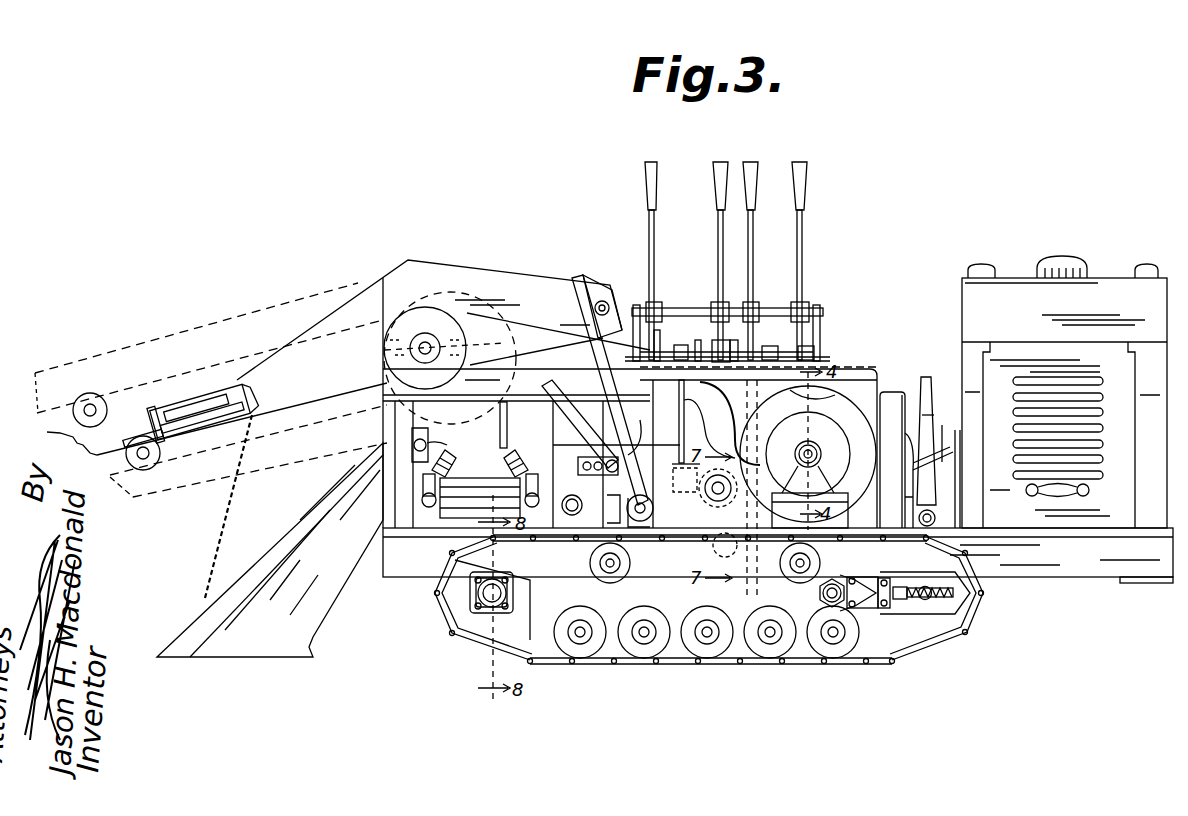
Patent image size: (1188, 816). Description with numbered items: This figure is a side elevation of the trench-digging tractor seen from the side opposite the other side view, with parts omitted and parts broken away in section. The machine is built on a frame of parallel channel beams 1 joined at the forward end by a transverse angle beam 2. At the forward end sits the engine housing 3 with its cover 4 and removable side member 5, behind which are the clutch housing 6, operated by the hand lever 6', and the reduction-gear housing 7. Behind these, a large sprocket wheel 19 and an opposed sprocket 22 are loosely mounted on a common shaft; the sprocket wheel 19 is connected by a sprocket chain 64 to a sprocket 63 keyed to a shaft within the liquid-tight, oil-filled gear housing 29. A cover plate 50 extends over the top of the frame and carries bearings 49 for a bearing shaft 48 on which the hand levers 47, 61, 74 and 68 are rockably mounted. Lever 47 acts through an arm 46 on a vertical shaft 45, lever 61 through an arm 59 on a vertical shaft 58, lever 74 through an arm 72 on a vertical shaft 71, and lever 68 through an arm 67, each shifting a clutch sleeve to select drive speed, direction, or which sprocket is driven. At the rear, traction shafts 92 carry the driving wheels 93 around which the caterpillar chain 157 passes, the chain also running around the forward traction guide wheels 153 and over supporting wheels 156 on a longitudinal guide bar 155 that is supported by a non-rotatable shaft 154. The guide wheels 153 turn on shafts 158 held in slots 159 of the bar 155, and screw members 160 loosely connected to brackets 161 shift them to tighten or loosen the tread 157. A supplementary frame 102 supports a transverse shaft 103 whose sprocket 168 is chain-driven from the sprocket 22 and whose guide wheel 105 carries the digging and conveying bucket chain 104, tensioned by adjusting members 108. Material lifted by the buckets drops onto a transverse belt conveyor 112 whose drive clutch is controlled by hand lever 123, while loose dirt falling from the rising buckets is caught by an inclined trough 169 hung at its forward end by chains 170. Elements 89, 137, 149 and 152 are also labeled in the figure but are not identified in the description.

The channel beams 1 is at (1105, 577).
The transverse angle beam 2 is at (1170, 583).
The engine housing 3 is at (962, 352).
The cover 4 is at (1008, 280).
The removable side member 5 is at (1067, 429).
The clutch housing 6 is at (932, 467).
The hand lever 6' is at (936, 449).
The housing for the reduction gears 7 is at (892, 392).
The sprocket wheel 19 is at (860, 392).
The sprocket 22 is at (812, 450).
The gear housing 29 is at (703, 492).
The vertical shaft 45 is at (678, 420).
The arm 46 is at (685, 336).
The hand lever 47 is at (655, 245).
The bearing shaft 48 is at (770, 308).
The bearings 49 is at (823, 318).
The cover plate 50 is at (860, 368).
The vertical shaft 58 is at (738, 420).
The arm 59 is at (714, 345).
The hand lever 61 is at (723, 245).
The sprocket 63 is at (715, 548).
The sprocket chain 64 is at (737, 548).
The arm 67 is at (800, 348).
The hand lever 68 is at (803, 245).
The vertical shaft 71 is at (814, 401).
The arm 72 is at (770, 346).
The hand lever 74 is at (753, 250).
The lever arm 89 is at (640, 405).
The traction shafts 92 is at (490, 596).
The driving wheels 93 is at (450, 600).
The supplementary frame 102 is at (495, 358).
The transverse shaft 103 is at (425, 348).
The bucket chain 104 is at (285, 320).
The guide wheel 105 is at (442, 294).
The adjusting members 108 is at (150, 470).
The transverse belt conveyor 112 is at (478, 478).
The hand lever 123 is at (565, 410).
The hose 137 is at (709, 426).
The link 149 is at (643, 428).
The valve stem 152 is at (660, 340).
The traction guide wheels 153 is at (985, 598).
The non-rotatable supporting shaft 154 is at (880, 665).
The longitudinal guide bar 155 is at (612, 630).
The supporting wheels 156 is at (735, 645).
The caterpillar chain 157 is at (800, 662).
The shafts 158 is at (836, 600).
The slots 159 is at (903, 586).
The screw members 160 is at (930, 598).
The brackets 161 is at (884, 578).
The sprocket 168 is at (408, 348).
The inclined trough 169 is at (330, 610).
The chains 170 is at (230, 520).